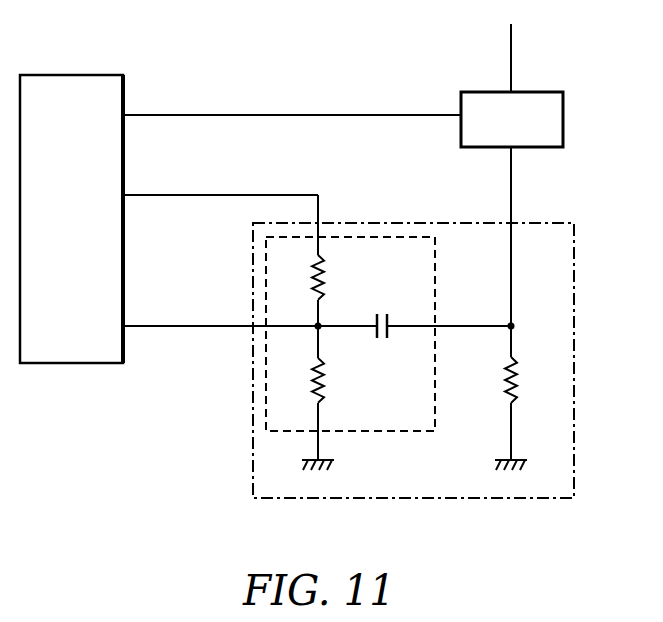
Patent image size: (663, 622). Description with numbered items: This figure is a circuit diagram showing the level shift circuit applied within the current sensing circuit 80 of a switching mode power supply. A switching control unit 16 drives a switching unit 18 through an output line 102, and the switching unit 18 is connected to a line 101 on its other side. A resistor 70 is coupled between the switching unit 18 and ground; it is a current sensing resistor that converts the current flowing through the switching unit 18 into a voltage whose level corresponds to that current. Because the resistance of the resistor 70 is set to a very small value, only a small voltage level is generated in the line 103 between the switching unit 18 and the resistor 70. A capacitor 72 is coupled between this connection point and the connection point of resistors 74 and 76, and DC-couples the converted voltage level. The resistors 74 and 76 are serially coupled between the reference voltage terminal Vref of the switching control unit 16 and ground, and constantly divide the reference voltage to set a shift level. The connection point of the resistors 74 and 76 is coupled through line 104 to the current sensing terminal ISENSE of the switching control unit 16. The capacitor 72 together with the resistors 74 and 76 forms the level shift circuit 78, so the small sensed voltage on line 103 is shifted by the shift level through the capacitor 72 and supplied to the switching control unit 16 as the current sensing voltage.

The switching control unit 16 is at (70, 75).
The switching unit 18 is at (563, 120).
The resistor 70 is at (529, 380).
The capacitor 72 is at (439, 313).
The resistor 74 is at (337, 277).
The resistor 76 is at (337, 380).
The level shift circuit 78 is at (394, 431).
The current sensing circuit 80 is at (574, 368).
The line 101 is at (511, 52).
The line 102 is at (302, 115).
The line 103 is at (511, 184).
The line 104 is at (185, 326).